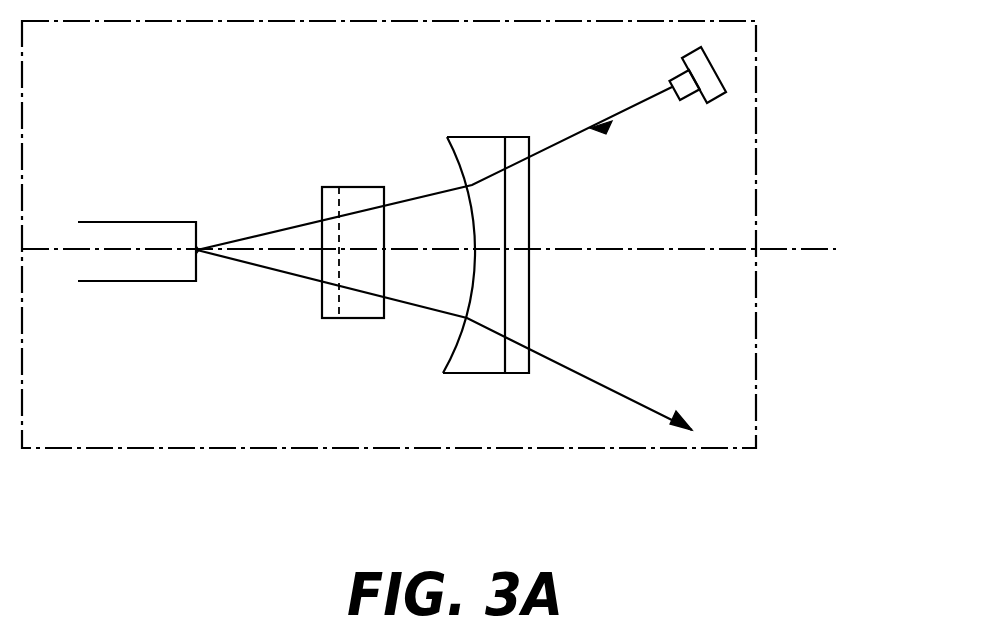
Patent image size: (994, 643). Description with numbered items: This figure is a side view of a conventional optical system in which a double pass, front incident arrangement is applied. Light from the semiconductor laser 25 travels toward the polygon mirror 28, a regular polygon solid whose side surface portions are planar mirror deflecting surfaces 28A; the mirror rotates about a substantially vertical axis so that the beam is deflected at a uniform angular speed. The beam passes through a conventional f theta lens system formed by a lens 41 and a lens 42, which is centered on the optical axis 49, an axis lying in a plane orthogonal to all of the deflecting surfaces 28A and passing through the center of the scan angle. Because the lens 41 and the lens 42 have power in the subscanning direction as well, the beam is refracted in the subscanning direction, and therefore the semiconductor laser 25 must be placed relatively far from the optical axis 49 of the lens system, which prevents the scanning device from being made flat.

The polygon mirror 28 is at (164, 230).
The deflecting surface 28A is at (197, 267).
The lens 41 is at (358, 197).
The lens 42 is at (484, 148).
The semiconductor laser 25 is at (716, 90).
The optical axis 49 is at (800, 247).